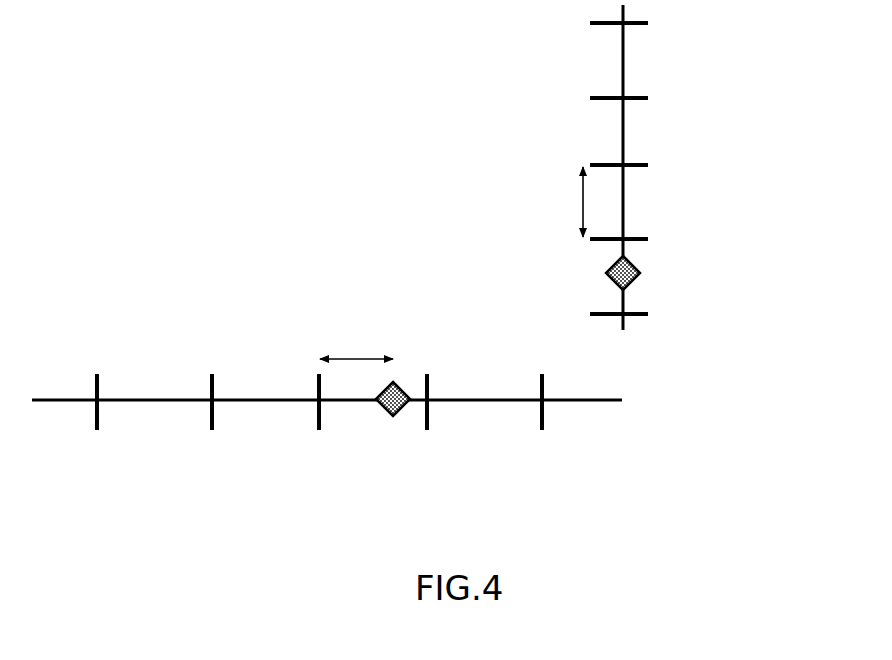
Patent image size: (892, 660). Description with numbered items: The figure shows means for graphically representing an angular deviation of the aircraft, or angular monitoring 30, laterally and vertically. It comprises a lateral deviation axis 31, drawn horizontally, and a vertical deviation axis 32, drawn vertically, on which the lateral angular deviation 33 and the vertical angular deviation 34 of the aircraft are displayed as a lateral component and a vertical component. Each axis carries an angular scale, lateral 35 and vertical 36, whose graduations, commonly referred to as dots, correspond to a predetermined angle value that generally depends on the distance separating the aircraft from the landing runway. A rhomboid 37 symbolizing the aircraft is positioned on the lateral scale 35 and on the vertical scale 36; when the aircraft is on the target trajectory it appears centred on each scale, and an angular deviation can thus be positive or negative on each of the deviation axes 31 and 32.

The angular monitoring 30 is at (332, 94).
The lateral deviation axis 31 is at (474, 482).
The vertical deviation axis 32 is at (721, 118).
The lateral angular deviation 33 is at (357, 351).
The vertical angular deviation 34 is at (579, 222).
The lateral angular scale 35 is at (570, 470).
The vertical angular scale 36 is at (700, 332).
The rhomboid 37 is at (400, 382).